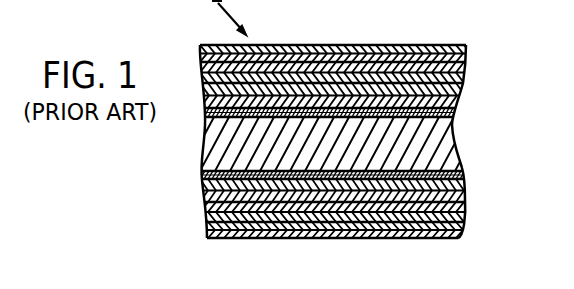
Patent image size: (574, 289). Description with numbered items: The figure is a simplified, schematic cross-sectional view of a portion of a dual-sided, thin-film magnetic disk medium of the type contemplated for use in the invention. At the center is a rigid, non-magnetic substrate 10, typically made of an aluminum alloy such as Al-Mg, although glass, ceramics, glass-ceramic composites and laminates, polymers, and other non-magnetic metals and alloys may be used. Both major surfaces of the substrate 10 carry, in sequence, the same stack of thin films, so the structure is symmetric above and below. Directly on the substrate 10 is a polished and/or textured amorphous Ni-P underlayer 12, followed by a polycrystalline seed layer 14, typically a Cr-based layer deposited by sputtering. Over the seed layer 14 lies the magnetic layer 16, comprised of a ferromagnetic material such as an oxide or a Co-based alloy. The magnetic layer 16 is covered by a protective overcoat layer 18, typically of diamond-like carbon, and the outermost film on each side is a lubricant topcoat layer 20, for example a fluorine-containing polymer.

The substrate 10 is at (447, 147).
The Ni-P underlayer 12 is at (450, 116).
The seed layer 14 is at (457, 101).
The magnetic layer 16 is at (462, 80).
The protective overcoat layer 18 is at (466, 53).
The lubricant topcoat layer 20 is at (419, 45).